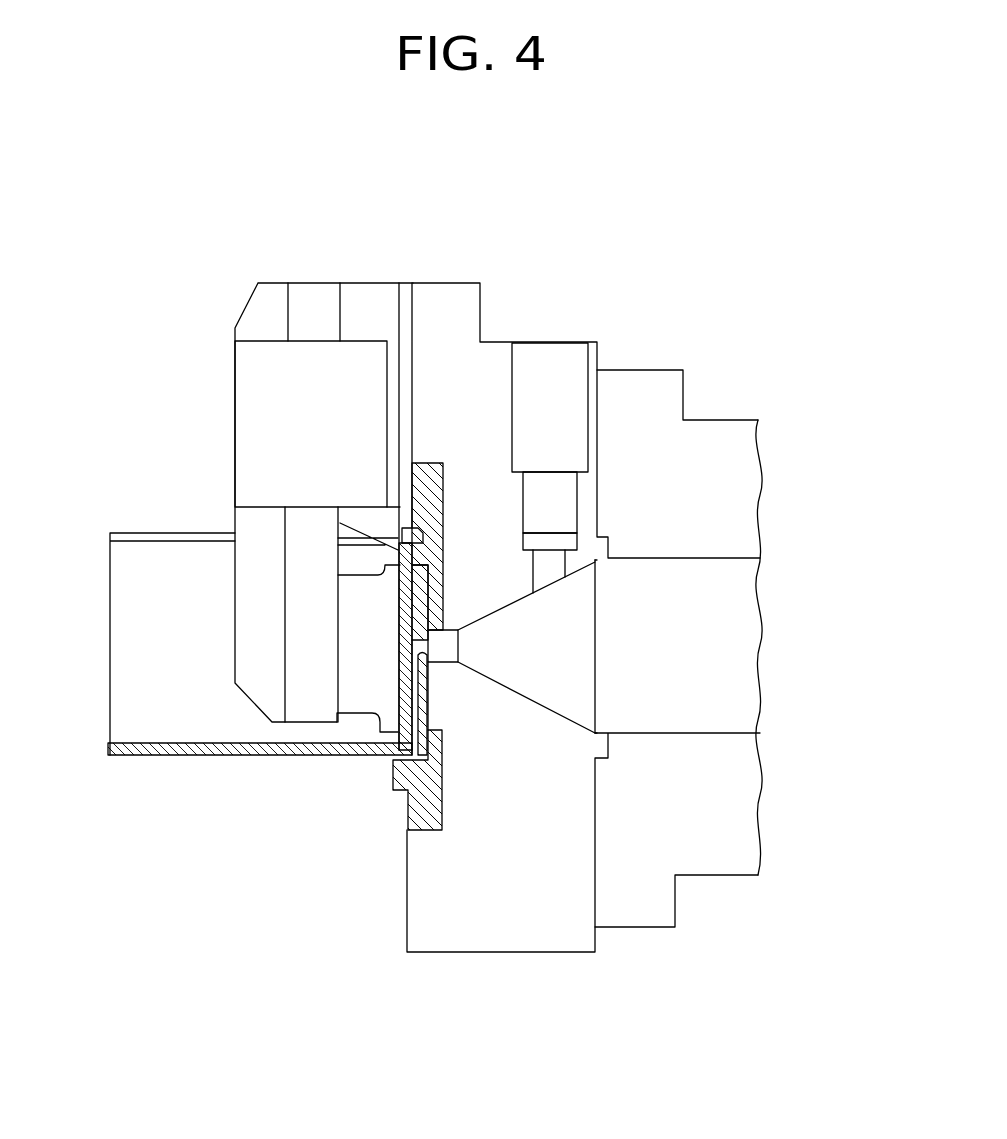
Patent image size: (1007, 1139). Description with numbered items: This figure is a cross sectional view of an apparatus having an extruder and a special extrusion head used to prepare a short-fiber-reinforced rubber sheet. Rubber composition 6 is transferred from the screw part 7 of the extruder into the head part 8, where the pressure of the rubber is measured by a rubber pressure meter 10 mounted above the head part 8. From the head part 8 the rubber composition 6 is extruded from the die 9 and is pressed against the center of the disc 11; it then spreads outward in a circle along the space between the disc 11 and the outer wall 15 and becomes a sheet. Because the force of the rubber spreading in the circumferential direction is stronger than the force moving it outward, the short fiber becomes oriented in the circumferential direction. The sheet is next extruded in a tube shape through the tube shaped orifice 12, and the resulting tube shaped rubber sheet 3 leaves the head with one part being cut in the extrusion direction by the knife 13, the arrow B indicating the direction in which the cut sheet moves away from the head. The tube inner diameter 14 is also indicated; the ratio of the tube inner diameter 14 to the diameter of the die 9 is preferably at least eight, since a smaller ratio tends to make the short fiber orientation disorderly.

The tube shaped rubber sheet 3 is at (145, 755).
The rubber composition 6 is at (797, 648).
The screw part 7 is at (713, 695).
The head part 8 is at (546, 670).
The die 9 is at (448, 650).
The rubber pressure meter 10 is at (566, 367).
The disc 11 is at (400, 732).
The tube shaped orifice 12 is at (392, 759).
The knife 13 is at (363, 518).
The tube inner diameter 14 is at (53, 540).
The outer wall 15 is at (417, 530).
The direction arrow B is at (185, 860).